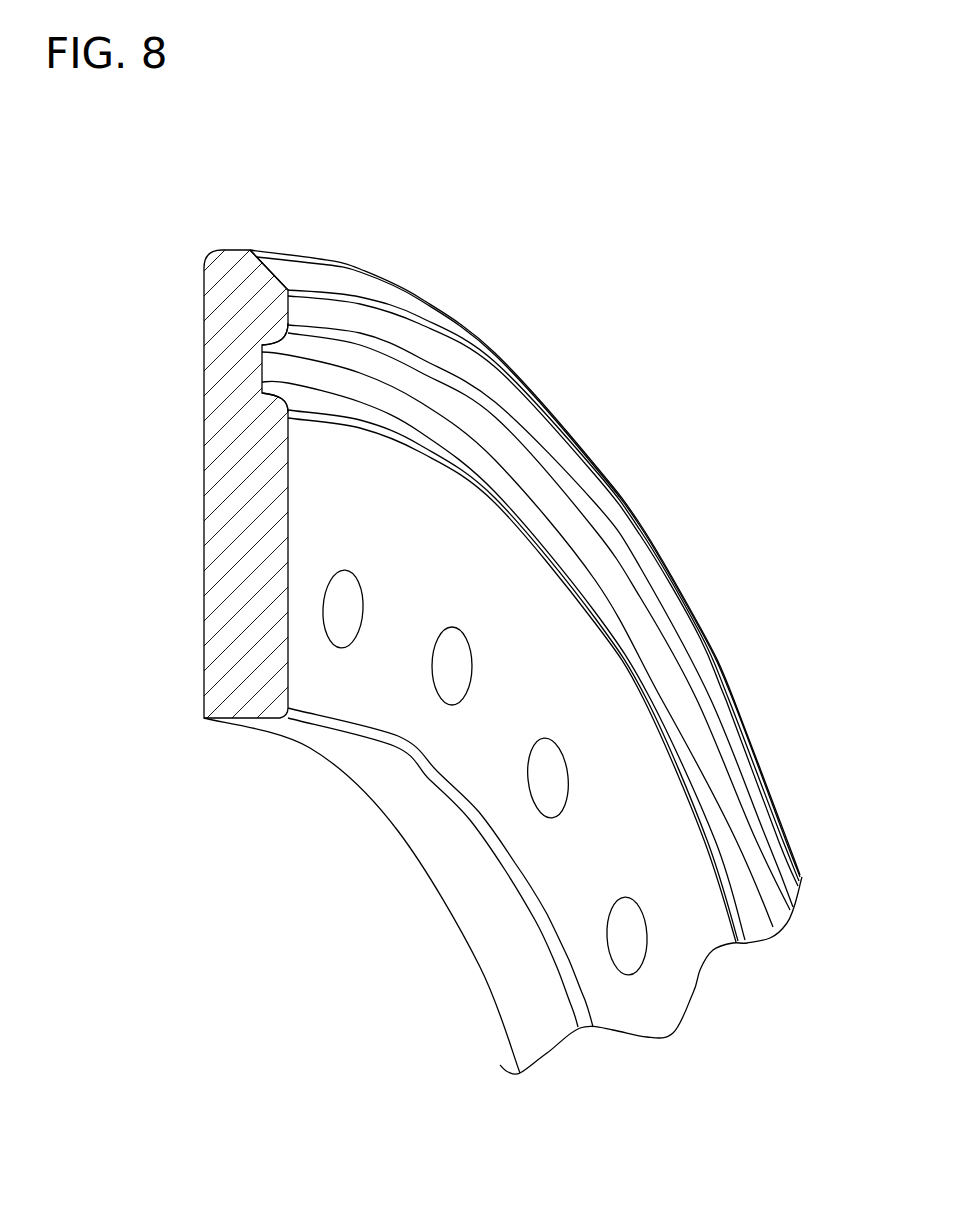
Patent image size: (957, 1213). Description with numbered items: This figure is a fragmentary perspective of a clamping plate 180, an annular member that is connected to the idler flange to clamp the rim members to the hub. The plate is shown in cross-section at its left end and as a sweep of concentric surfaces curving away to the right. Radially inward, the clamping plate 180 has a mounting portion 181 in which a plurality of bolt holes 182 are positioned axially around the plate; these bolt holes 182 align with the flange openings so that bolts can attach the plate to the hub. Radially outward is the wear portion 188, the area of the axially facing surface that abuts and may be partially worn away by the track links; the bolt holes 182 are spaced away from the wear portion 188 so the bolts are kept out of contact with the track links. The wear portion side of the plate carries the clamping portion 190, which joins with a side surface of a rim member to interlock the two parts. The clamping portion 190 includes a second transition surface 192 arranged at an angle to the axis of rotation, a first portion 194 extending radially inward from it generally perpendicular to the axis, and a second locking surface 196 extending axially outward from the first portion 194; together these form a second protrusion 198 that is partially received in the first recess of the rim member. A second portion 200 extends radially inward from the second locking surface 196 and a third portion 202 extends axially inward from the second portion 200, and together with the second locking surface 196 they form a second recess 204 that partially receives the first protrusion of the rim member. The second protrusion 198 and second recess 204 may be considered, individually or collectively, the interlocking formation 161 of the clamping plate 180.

The clamping plate 180 is at (682, 328).
The mounting portion 181 is at (182, 528).
The bolt holes 182 is at (445, 685).
The wear portion 188 is at (182, 249).
The clamping portion 190 is at (637, 522).
The second transition surface 192 is at (284, 278).
The first portion 194 is at (372, 322).
The second locking surface 196 is at (510, 452).
The second protrusion 198 is at (445, 324).
The second portion 200 is at (275, 366).
The third portion 202 is at (272, 393).
The second recess 204 is at (637, 612).
The interlocking formation 161 is at (532, 492).